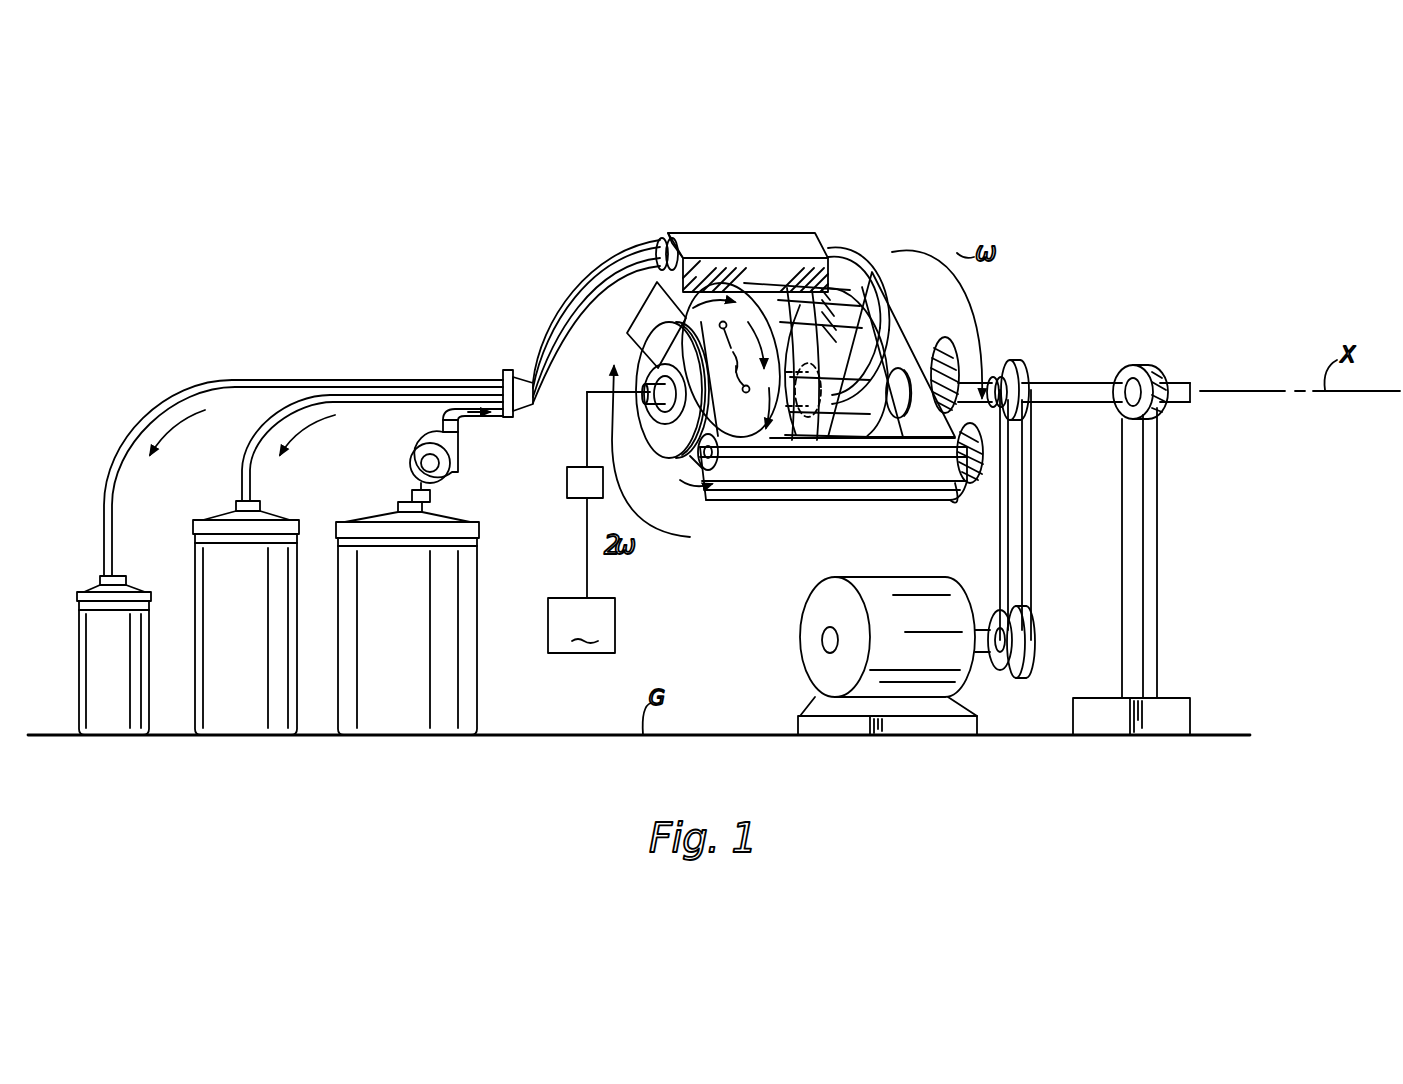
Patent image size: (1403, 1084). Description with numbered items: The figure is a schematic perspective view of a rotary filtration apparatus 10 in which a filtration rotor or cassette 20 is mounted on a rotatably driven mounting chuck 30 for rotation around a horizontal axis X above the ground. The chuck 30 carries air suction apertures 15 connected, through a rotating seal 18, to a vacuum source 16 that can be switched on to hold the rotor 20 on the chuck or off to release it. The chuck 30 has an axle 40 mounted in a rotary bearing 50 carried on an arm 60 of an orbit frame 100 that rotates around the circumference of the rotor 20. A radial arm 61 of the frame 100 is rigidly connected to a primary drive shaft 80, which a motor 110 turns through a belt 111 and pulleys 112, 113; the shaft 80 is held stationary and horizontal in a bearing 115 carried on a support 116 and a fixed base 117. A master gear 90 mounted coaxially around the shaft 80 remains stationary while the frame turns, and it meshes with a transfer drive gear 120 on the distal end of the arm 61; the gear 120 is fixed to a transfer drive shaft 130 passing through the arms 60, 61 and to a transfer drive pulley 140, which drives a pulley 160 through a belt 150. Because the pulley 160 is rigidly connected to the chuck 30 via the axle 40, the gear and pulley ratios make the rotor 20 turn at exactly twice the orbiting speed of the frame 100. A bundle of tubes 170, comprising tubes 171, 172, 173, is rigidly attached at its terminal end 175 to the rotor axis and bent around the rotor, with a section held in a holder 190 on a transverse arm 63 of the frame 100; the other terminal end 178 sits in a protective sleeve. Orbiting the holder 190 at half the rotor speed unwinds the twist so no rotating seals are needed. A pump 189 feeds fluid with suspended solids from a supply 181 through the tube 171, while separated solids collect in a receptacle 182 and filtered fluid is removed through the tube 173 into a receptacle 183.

The rotary filtration apparatus 10 is at (536, 200).
The air suction apertures 15 is at (754, 378).
The air suction vacuum source 16 is at (599, 522).
The rotating seal 18 is at (568, 485).
The filtration rotor 20 is at (820, 455).
The mounting chuck 30 is at (780, 455).
The axle 40 is at (640, 358).
The rotary bearing 50 is at (660, 427).
The arm 60 is at (650, 300).
The radial arm 61 is at (898, 320).
The transverse arm 63 is at (850, 280).
The primary drive shaft 80 is at (982, 383).
The master gear 90 is at (948, 338).
The orbit frame 100 is at (876, 494).
The motor 110 is at (807, 652).
The belt 111 is at (1033, 520).
The pulley 112 is at (1030, 375).
The pulley 113 is at (1043, 643).
The bearing 115 is at (1160, 373).
The support 116 is at (1152, 550).
The fixed base 117 is at (1173, 698).
The transfer drive gear 120 is at (978, 490).
The transfer drive shaft 130 is at (748, 480).
The transfer drive pulley 140 is at (708, 472).
The belt 150 is at (700, 468).
The pulley 160 is at (627, 318).
The bundle of tubes 170 is at (838, 246).
The tube 171 is at (508, 418).
The tube 172 is at (250, 456).
The tube 173 is at (230, 382).
The terminal end 175 is at (836, 404).
The terminal end 178 is at (510, 368).
The feed supply 181 is at (418, 708).
The receptacle for separated solids 182 is at (253, 707).
The receptacle for filtered fluid 183 is at (119, 722).
The pump 189 is at (410, 463).
The holder 190 is at (762, 234).